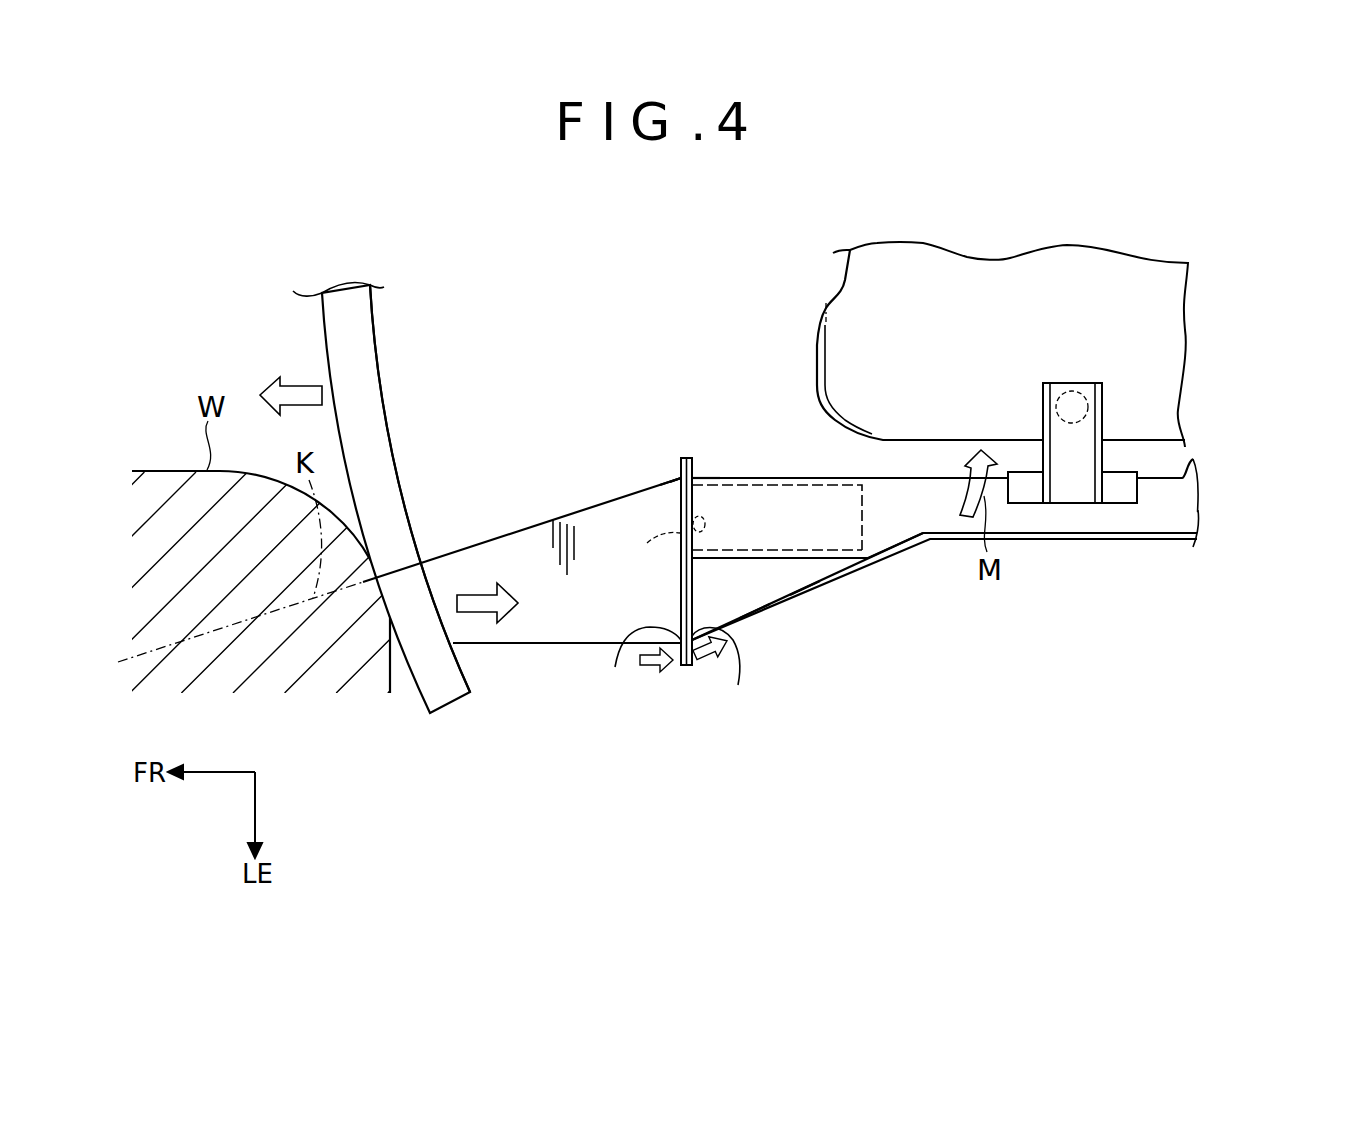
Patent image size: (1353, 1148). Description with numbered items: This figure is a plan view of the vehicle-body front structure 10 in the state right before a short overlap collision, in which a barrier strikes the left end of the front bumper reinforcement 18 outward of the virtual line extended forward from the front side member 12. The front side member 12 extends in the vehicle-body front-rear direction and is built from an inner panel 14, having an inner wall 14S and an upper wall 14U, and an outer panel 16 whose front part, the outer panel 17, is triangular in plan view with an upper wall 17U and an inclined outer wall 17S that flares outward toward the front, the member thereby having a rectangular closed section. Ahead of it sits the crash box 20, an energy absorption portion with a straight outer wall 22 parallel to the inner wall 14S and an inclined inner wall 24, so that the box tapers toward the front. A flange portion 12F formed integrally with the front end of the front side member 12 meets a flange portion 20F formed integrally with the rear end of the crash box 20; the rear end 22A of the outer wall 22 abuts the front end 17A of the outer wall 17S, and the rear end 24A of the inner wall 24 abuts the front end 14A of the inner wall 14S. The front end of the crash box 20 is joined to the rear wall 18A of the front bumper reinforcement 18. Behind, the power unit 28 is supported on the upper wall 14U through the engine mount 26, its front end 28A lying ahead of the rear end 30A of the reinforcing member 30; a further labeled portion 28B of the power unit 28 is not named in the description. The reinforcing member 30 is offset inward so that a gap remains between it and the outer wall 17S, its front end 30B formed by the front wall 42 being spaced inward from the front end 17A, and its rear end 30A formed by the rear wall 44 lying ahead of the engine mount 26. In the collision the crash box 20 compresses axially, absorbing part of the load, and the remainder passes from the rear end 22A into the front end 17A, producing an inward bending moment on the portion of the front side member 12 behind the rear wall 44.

The vehicle-body front structure 10 is at (675, 553).
The front side member 12 is at (944, 642).
The flange portion 12F is at (693, 457).
The inner panel 14 is at (982, 505).
The front end 14A is at (694, 477).
The inner wall 14S is at (1194, 460).
The upper wall 14U is at (1130, 520).
The outer panel 16 is at (1045, 540).
The outer panel 17 is at (807, 625).
The front end 17A is at (738, 685).
The outer wall 17S is at (807, 593).
The upper wall 17U is at (755, 592).
The front bumper reinforcement 18 is at (360, 497).
The rear wall 18A is at (402, 472).
The crash box 20 is at (522, 581).
The flange portion 20F is at (675, 462).
The outer wall 22 is at (507, 645).
The rear end 22A is at (615, 667).
The inner wall 24 is at (483, 542).
The rear end 24A is at (677, 476).
The engine mount 26 is at (1088, 427).
The power unit 28 is at (961, 319).
The front end 28A is at (816, 362).
The lower surface of battery unit 28B is at (962, 450).
The reinforcing member 30 is at (814, 532).
The rear end 30A is at (862, 550).
The front end 30B is at (629, 551).
The front wall 42 is at (629, 551).
The rear wall 44 is at (813, 586).